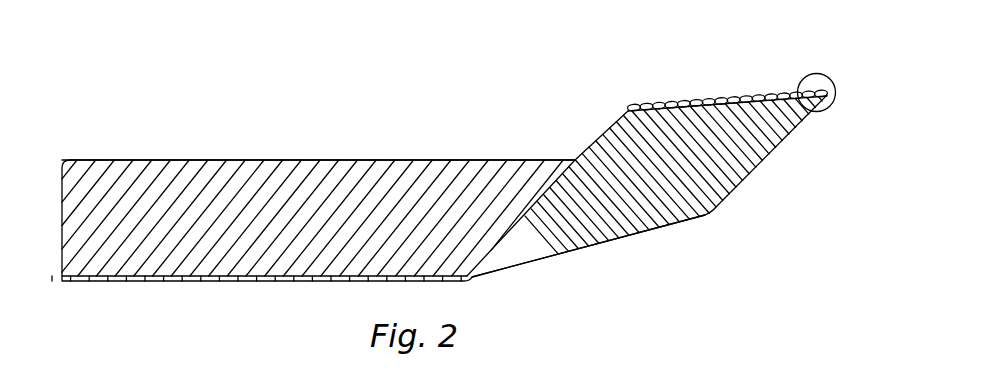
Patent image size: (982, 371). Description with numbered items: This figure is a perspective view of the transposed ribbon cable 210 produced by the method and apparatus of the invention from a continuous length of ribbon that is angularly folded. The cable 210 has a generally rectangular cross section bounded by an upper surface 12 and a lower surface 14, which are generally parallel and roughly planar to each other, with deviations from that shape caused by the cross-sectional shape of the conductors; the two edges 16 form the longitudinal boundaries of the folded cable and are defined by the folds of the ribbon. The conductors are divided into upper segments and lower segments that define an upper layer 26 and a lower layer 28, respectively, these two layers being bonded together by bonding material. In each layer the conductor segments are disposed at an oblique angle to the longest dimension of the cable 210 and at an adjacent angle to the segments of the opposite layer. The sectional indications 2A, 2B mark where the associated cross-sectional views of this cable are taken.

The transposed ribbon cable 210 is at (444, 182).
The upper surface 12 is at (483, 101).
The lower surface 14 is at (648, 176).
The edges 16 is at (344, 160).
The upper layer 26 is at (158, 187).
The lower layer 28 is at (556, 222).
The section line 2A is at (785, 83).
The section line 2B is at (802, 78).